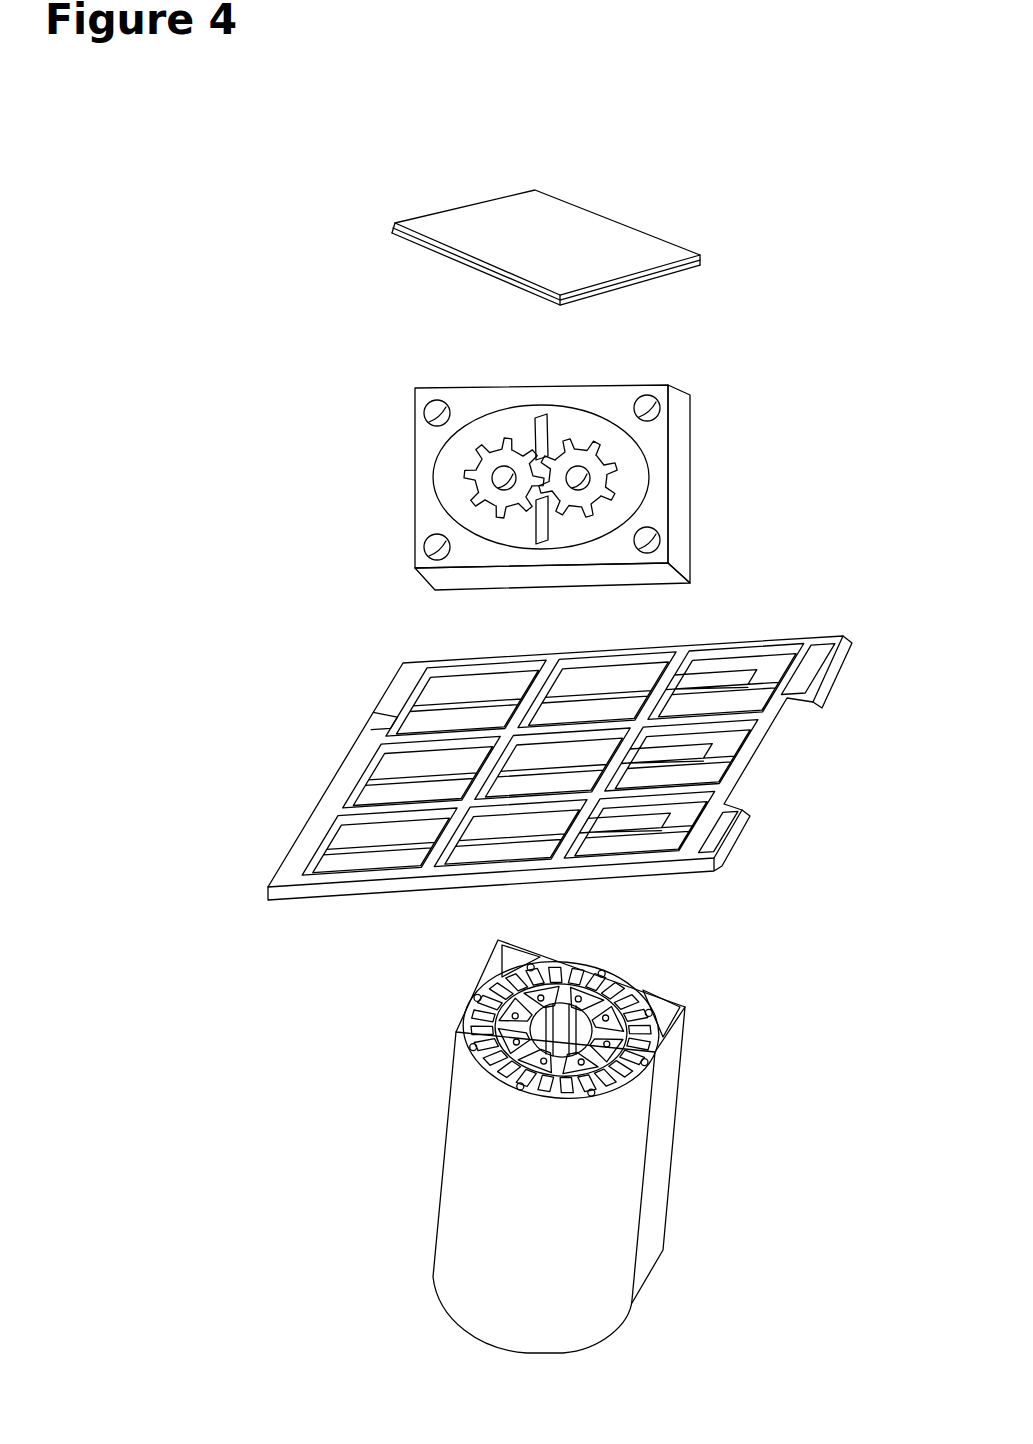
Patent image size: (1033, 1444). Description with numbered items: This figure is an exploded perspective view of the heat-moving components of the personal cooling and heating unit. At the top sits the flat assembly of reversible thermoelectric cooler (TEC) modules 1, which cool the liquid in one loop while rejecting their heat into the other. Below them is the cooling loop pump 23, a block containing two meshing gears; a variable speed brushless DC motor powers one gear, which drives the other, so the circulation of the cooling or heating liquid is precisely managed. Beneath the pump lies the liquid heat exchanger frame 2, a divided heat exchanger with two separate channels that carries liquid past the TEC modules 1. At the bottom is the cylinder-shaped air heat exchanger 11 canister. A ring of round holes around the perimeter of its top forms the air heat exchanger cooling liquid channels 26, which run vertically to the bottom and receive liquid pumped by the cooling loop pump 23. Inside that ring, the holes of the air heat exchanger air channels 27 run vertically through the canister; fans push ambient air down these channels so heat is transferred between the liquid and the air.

The reversible thermoelectric cooler (TEC) modules 1 is at (578, 244).
The liquid heat exchanger frame 2 is at (288, 840).
The cooling loop pump 23 is at (695, 492).
The air heat exchanger 11 is at (606, 1210).
The air heat exchanger cooling liquid channel 26 is at (455, 1002).
The air heat exchanger air channel 27 is at (596, 992).